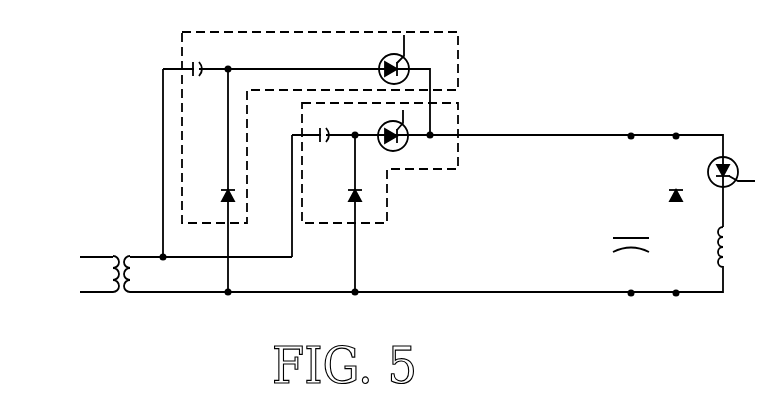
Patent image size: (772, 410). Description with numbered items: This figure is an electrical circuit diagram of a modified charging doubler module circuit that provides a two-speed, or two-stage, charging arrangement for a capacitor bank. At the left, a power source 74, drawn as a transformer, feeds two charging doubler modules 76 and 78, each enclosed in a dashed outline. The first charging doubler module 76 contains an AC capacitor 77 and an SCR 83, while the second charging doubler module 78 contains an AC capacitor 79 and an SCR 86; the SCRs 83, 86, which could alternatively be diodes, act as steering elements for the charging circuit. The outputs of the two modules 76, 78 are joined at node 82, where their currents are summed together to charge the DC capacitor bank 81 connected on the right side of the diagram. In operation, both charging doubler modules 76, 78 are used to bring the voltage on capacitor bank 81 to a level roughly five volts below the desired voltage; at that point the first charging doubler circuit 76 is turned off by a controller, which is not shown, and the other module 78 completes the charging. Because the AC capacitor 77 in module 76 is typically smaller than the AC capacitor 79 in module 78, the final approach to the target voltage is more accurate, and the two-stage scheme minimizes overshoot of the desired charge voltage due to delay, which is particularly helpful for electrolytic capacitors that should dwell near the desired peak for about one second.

The power source 74 is at (124, 250).
The charging doubler module 76 is at (181, 44).
The AC capacitor 77 is at (206, 64).
The charging doubler module 78 is at (393, 171).
The AC capacitor 79 is at (328, 143).
The DC capacitor bank 81 is at (625, 237).
The node 82 is at (434, 133).
The SCR 83 is at (380, 58).
The SCR 86 is at (403, 148).